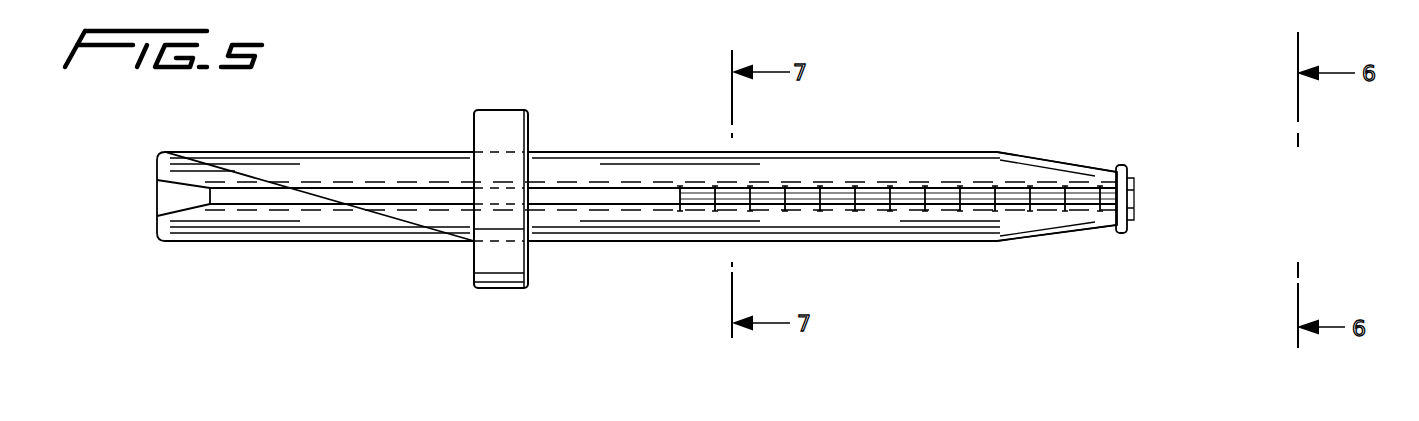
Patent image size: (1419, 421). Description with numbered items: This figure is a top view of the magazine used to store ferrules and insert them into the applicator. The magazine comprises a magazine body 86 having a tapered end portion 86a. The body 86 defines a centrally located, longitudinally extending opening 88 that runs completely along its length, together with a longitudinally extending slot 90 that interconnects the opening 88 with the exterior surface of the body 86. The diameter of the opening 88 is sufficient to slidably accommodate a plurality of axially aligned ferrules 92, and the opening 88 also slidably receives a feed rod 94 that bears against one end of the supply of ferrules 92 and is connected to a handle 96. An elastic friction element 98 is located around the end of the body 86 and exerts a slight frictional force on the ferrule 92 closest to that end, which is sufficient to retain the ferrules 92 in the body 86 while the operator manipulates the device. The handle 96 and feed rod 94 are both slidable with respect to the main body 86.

The magazine body 86 is at (312, 233).
The tapered end portion 86a is at (1060, 230).
The longitudinally extending opening 88 is at (172, 191).
The longitudinally extending slot 90 is at (350, 196).
The ferrules 92 is at (938, 198).
The feed rod 94 is at (645, 197).
The handle 96 is at (522, 263).
The elastic friction element 98 is at (1127, 167).